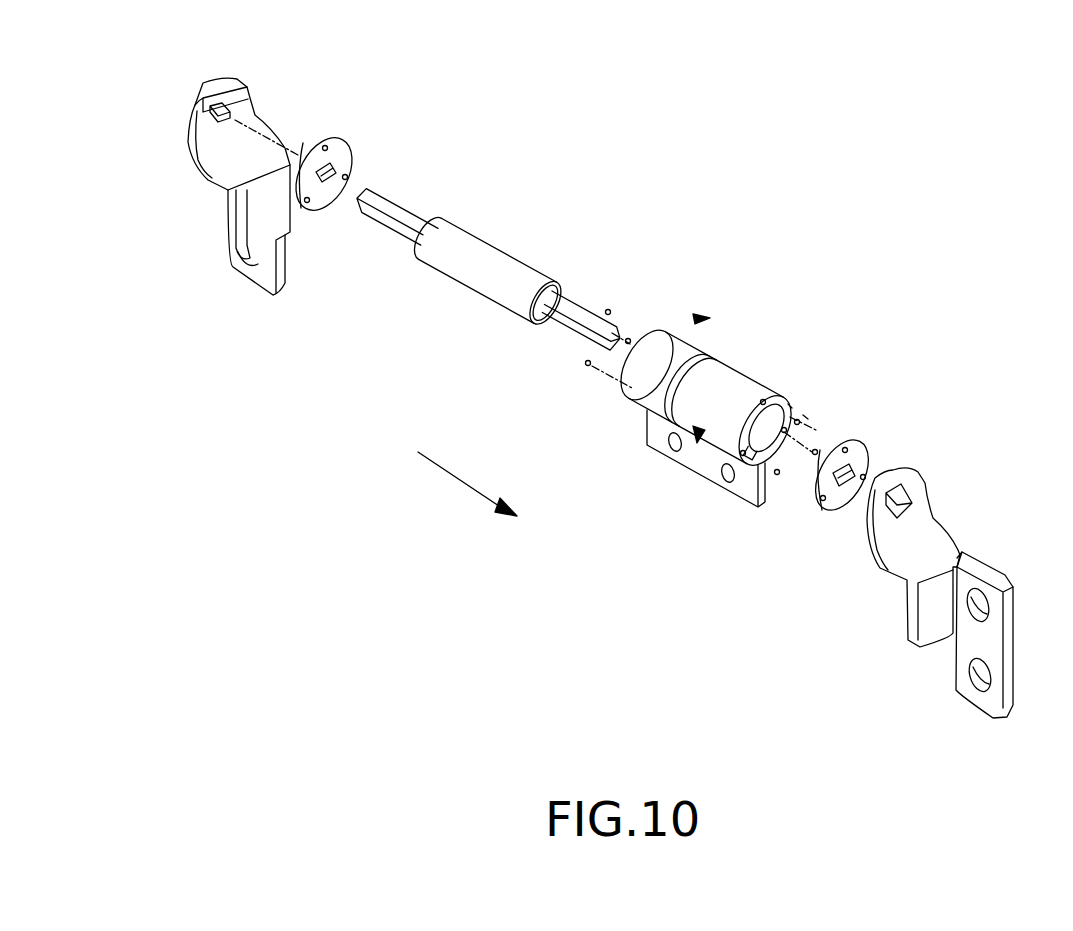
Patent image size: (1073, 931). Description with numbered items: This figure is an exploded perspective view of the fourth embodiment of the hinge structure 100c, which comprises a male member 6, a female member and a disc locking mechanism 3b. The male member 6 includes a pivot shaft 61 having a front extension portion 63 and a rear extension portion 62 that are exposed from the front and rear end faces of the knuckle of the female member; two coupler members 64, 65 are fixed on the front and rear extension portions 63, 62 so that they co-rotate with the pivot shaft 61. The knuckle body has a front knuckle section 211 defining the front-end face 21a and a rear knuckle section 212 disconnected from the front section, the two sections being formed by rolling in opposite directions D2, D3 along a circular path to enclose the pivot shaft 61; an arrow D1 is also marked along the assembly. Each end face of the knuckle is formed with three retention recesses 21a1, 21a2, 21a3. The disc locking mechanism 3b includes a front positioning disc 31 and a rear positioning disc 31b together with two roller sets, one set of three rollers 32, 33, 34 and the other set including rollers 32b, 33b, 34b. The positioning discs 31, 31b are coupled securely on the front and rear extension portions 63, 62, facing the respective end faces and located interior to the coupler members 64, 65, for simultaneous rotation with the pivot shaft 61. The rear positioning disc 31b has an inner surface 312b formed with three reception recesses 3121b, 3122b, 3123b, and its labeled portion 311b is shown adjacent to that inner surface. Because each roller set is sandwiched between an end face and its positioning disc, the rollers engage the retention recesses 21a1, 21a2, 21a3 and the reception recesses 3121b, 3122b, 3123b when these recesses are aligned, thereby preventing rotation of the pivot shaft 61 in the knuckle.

The hinge structure 100c is at (806, 145).
The front-end face 21a is at (790, 406).
The retention recess 21a1 is at (738, 495).
The retention recess 21a2 is at (786, 402).
The retention recess 21a3 is at (806, 418).
The front knuckle section 211 is at (753, 390).
The rear knuckle section 212 is at (681, 367).
The disc locking mechanism 3b is at (967, 551).
The front positioning disc 31 is at (863, 437).
The rear positioning disc 31b is at (346, 146).
The hole of cam disc 311b is at (307, 160).
The inner surface 312b is at (348, 162).
The reception recess 3121b is at (305, 210).
The reception recess 3122b is at (333, 142).
The reception recess 3123b is at (352, 177).
The roller 32 is at (777, 475).
The roller 32b is at (588, 366).
The roller 33 is at (800, 423).
The roller 33b is at (607, 309).
The roller 34 is at (818, 455).
The screw 34b is at (628, 338).
The male member 6 is at (478, 281).
The pivot shaft 61 is at (480, 268).
The rear extension portion 62 is at (400, 228).
The front extension portion 63 is at (567, 327).
The coupler member 64 is at (248, 272).
The coupler member 65 is at (967, 645).
The direction D1 is at (467, 491).
The rolling direction D2 is at (783, 352).
The rolling direction D3 is at (660, 376).